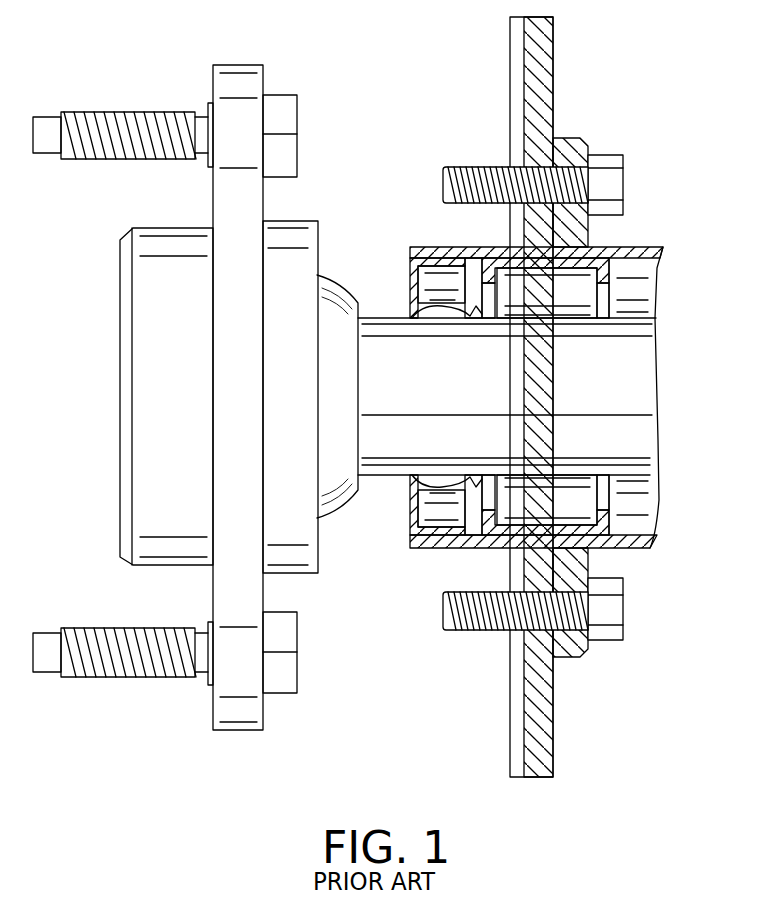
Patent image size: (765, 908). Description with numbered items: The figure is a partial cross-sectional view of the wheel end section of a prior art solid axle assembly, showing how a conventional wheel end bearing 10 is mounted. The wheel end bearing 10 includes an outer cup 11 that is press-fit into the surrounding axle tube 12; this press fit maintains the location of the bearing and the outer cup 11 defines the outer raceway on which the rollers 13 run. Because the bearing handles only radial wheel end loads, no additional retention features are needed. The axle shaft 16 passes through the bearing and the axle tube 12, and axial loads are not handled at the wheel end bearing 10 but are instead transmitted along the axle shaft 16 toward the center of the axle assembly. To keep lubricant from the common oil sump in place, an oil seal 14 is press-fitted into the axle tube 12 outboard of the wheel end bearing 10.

The wheel end bearing 10 is at (620, 296).
The outer cup 11 is at (613, 519).
The axle tube 12 is at (641, 247).
The rollers 13 is at (598, 500).
The oil seal 14 is at (413, 513).
The axle shaft 16 is at (538, 397).